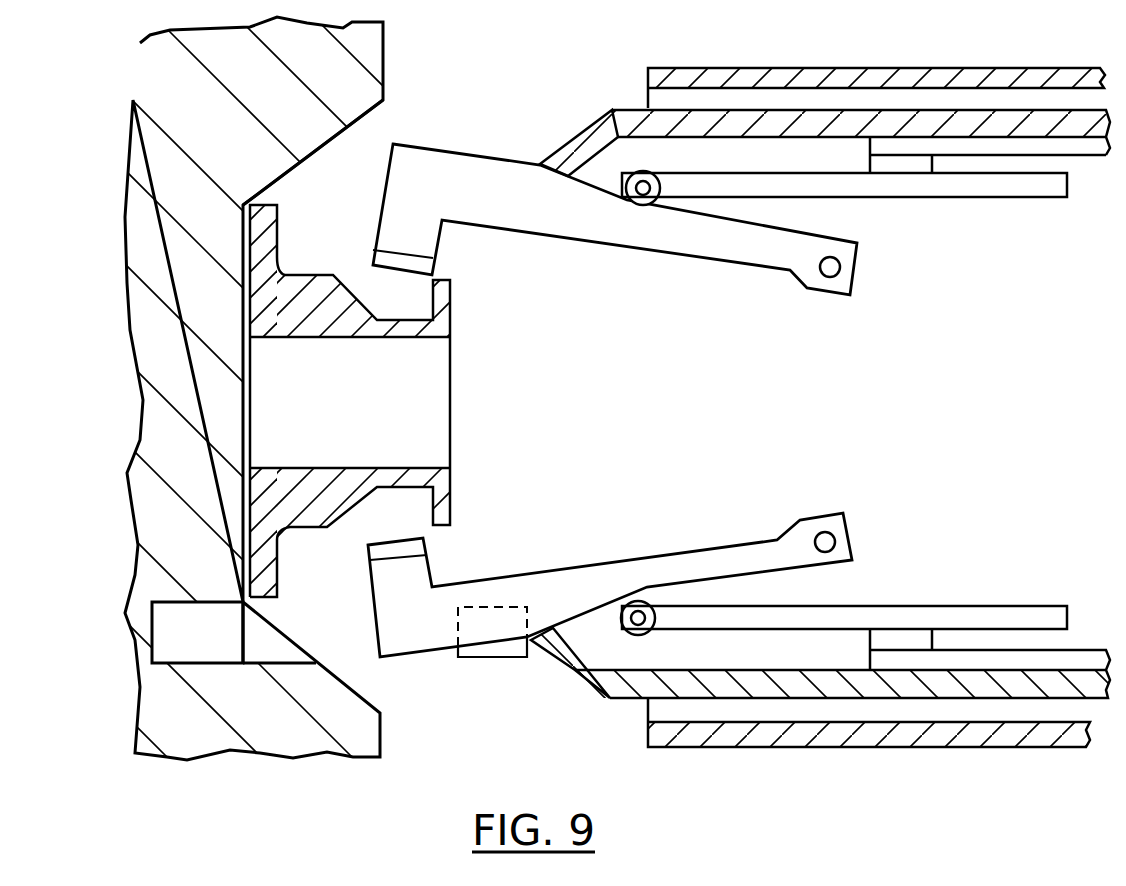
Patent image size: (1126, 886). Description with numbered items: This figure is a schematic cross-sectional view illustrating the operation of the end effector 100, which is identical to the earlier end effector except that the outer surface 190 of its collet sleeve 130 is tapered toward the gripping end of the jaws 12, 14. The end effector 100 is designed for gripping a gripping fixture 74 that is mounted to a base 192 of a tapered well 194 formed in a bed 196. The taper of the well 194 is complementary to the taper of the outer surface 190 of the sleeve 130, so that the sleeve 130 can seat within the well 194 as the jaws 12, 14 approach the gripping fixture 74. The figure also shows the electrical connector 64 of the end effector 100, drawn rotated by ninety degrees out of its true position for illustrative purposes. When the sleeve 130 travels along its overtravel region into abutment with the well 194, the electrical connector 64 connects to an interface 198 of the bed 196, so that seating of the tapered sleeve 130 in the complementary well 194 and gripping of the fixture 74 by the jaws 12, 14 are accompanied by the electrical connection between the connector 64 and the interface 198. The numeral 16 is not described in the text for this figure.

The jaw 12 is at (563, 580).
The jaw 14 is at (540, 223).
The upper circuit board 16 is at (848, 67).
The electrical connector 64 is at (487, 660).
The gripping fixture 74 is at (450, 318).
The end effector 100 is at (856, 762).
The collet sleeve 130 is at (977, 110).
The outer surface 190 is at (560, 148).
The base 192 is at (250, 253).
The tapered well 194 is at (309, 155).
The bed 196 is at (220, 129).
The interface 198 is at (163, 617).